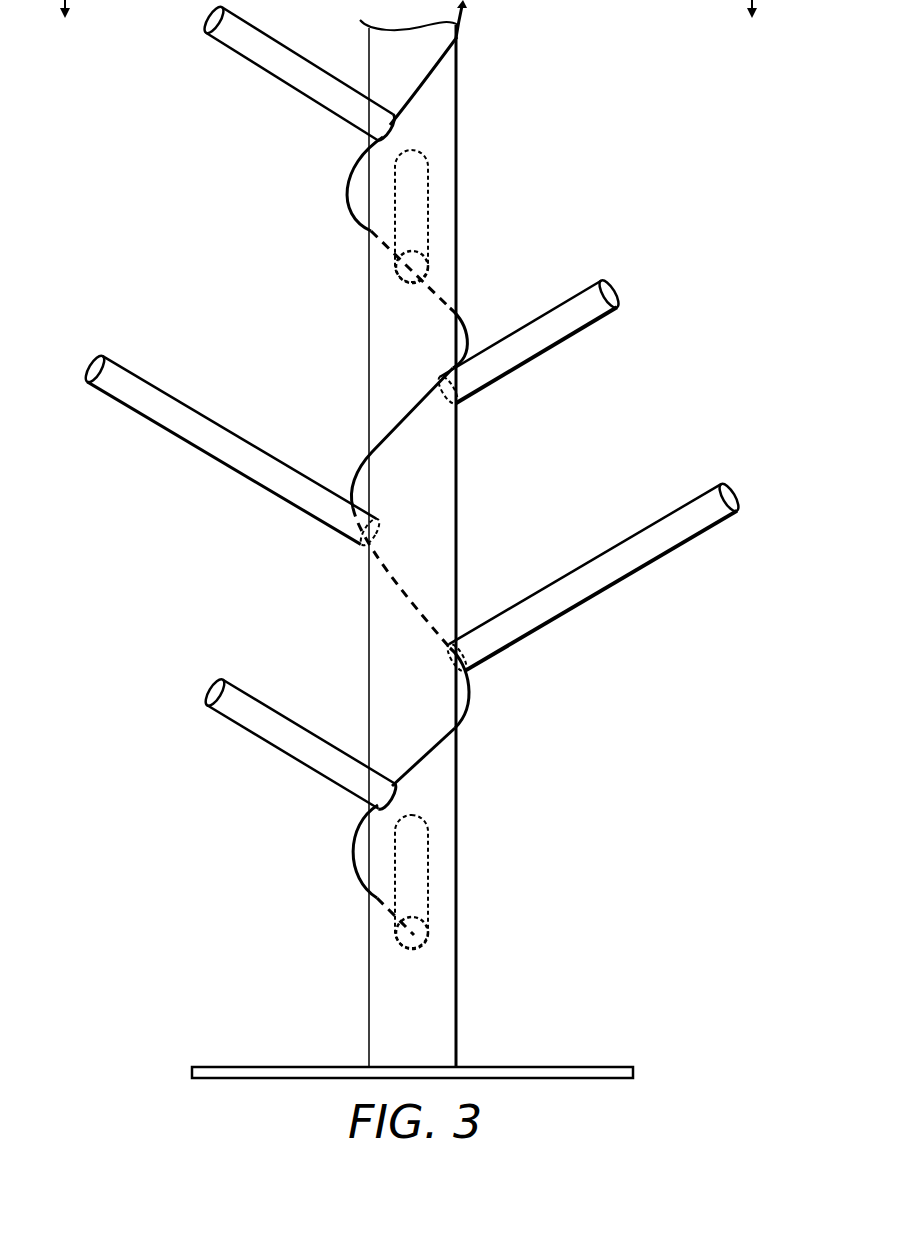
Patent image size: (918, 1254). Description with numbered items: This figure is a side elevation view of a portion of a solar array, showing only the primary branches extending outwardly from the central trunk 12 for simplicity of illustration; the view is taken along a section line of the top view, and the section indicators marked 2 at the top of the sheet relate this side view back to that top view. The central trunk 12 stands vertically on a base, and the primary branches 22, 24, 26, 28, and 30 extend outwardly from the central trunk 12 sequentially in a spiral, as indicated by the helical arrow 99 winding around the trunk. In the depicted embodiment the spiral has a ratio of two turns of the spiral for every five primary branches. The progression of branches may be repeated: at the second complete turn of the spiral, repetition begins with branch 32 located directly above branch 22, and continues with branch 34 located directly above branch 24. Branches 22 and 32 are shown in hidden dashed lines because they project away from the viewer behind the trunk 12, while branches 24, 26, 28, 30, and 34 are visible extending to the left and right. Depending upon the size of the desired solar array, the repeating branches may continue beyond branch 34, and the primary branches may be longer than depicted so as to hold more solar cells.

The section line of FIG. 2 is at (409, 23).
The central trunk 12 is at (457, 518).
The primary branch 22 is at (430, 868).
The primary branch 24 is at (268, 745).
The primary branch 26 is at (610, 588).
The primary branch 28 is at (213, 460).
The primary branch 30 is at (557, 348).
The primary branch 32 is at (428, 202).
The primary branch 34 is at (268, 75).
The helical arrow 99 is at (472, 700).